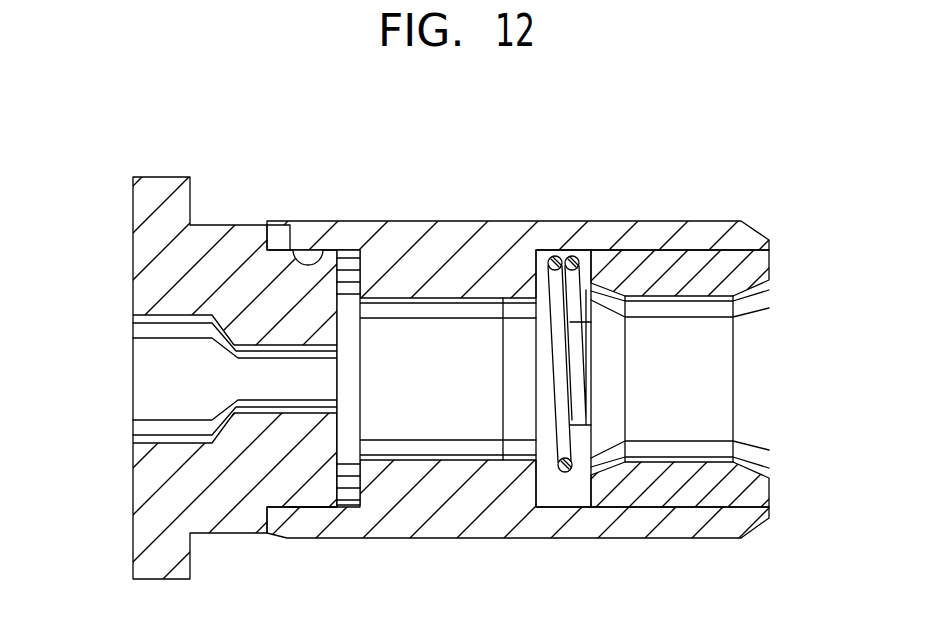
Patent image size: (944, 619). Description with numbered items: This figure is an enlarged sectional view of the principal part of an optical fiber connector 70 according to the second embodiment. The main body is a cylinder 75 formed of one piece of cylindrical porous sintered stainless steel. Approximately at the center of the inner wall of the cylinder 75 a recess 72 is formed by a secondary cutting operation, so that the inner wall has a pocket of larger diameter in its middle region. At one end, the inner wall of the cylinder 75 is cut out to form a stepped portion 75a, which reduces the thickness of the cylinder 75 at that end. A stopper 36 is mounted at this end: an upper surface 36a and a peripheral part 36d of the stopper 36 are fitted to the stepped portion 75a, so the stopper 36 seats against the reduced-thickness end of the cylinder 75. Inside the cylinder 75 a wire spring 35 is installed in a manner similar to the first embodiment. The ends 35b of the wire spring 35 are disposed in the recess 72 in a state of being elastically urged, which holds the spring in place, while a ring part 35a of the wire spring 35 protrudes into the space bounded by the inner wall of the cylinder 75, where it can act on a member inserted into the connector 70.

The stopper 36 is at (155, 240).
The peripheral part of the stopper 36d is at (282, 242).
The upper surface of the stopper 36a is at (340, 448).
The optical fiber connector 70 is at (518, 361).
The recess 72 is at (543, 257).
The cylinder 75 is at (702, 235).
The stepped portion 75a is at (334, 262).
The wire spring 35 is at (619, 435).
The ring part 35a is at (570, 328).
The ends of the wire spring 35b is at (562, 470).